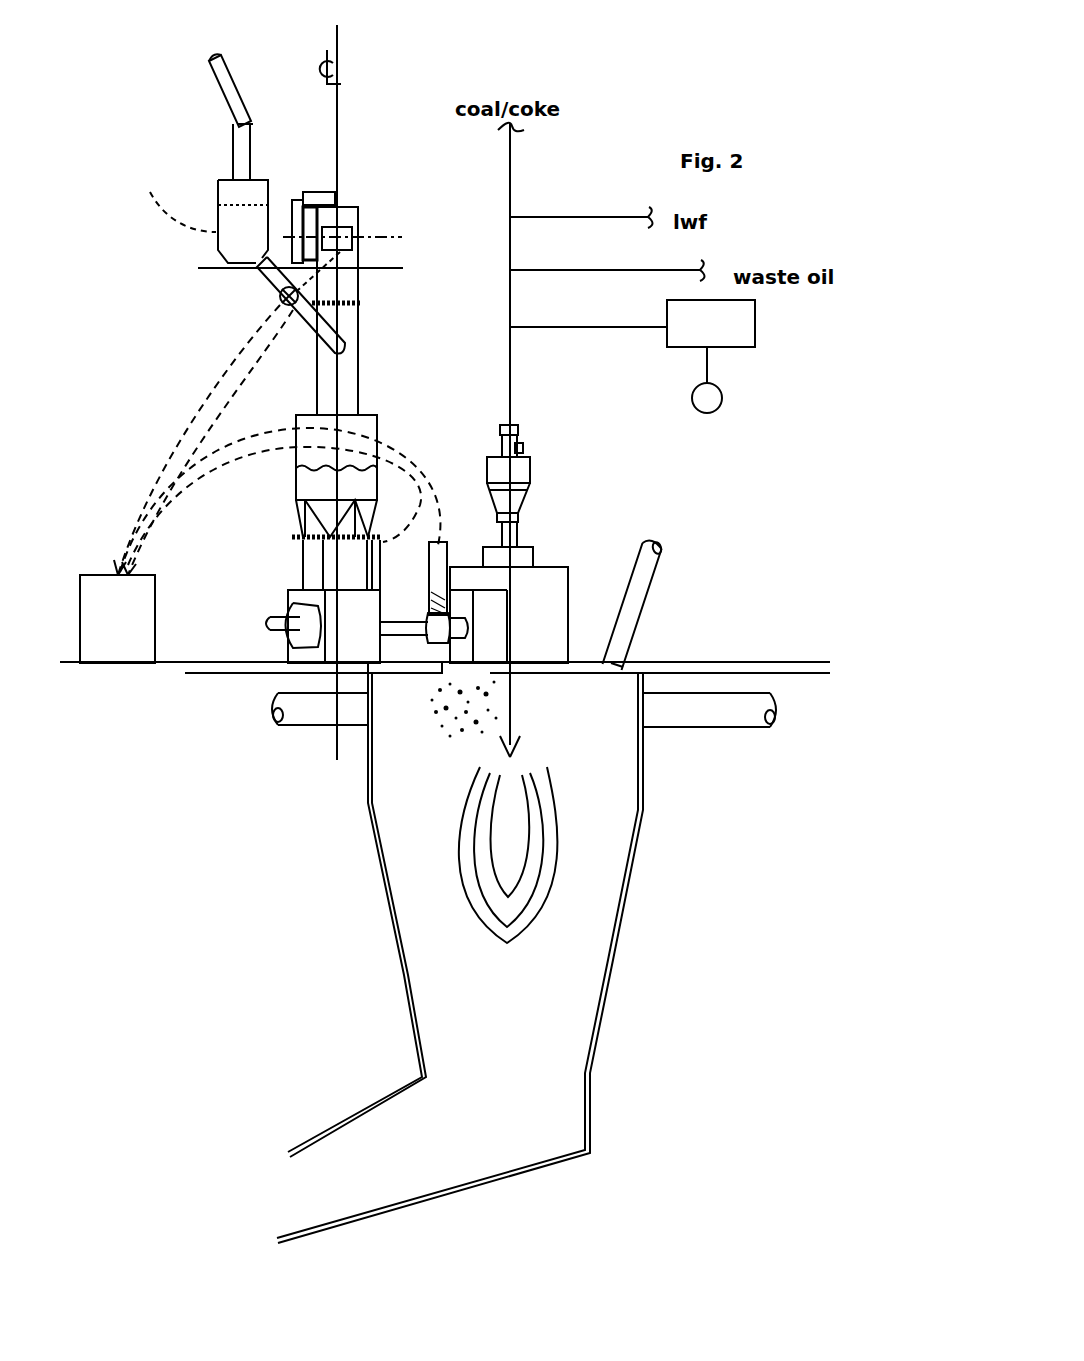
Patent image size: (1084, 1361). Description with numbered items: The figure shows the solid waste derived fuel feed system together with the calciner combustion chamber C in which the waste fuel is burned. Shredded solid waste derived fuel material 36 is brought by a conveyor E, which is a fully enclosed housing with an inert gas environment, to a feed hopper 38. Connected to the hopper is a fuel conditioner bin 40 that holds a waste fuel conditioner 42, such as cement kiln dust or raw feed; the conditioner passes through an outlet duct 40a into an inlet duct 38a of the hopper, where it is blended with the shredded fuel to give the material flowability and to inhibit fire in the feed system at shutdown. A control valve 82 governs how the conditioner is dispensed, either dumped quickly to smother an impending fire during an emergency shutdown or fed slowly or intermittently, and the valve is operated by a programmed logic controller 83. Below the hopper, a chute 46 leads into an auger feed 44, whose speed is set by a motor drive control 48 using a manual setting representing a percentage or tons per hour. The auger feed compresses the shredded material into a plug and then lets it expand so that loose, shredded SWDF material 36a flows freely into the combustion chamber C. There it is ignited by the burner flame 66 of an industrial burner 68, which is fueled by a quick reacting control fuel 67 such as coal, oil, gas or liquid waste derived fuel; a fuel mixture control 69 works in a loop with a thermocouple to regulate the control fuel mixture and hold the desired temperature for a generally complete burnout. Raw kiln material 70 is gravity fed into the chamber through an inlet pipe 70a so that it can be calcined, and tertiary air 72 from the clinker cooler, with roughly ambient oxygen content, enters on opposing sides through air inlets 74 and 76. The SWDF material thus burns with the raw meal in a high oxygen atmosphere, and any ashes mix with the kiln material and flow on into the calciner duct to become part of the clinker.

The solid waste derived fuel material 36 is at (320, 485).
The loose, shredded SWDF material 36a is at (472, 735).
The feed hopper 38 is at (378, 422).
The inlet duct 38a is at (360, 350).
The fuel conditioner bin 40 is at (216, 185).
The outlet duct 40a is at (262, 272).
The waste fuel conditioner 42 is at (445, 542).
The auger feed 44 is at (280, 648).
The chute 46 is at (302, 575).
The motor drive control 48 is at (268, 622).
The burner flame 66 is at (560, 797).
The control fuel 67 is at (518, 470).
The industrial burner 68 is at (560, 567).
The fuel mixture control 69 is at (711, 356).
The raw kiln material 70 is at (656, 546).
The inlet pipe 70a is at (650, 607).
The tertiary air 72 is at (268, 712).
The air inlet 74 is at (333, 728).
The air inlet 76 is at (698, 727).
The control valve 82 is at (278, 300).
The programmed logic controller 83 is at (100, 575).
The conveyor E is at (341, 222).
The calciner combustion chamber C is at (645, 912).